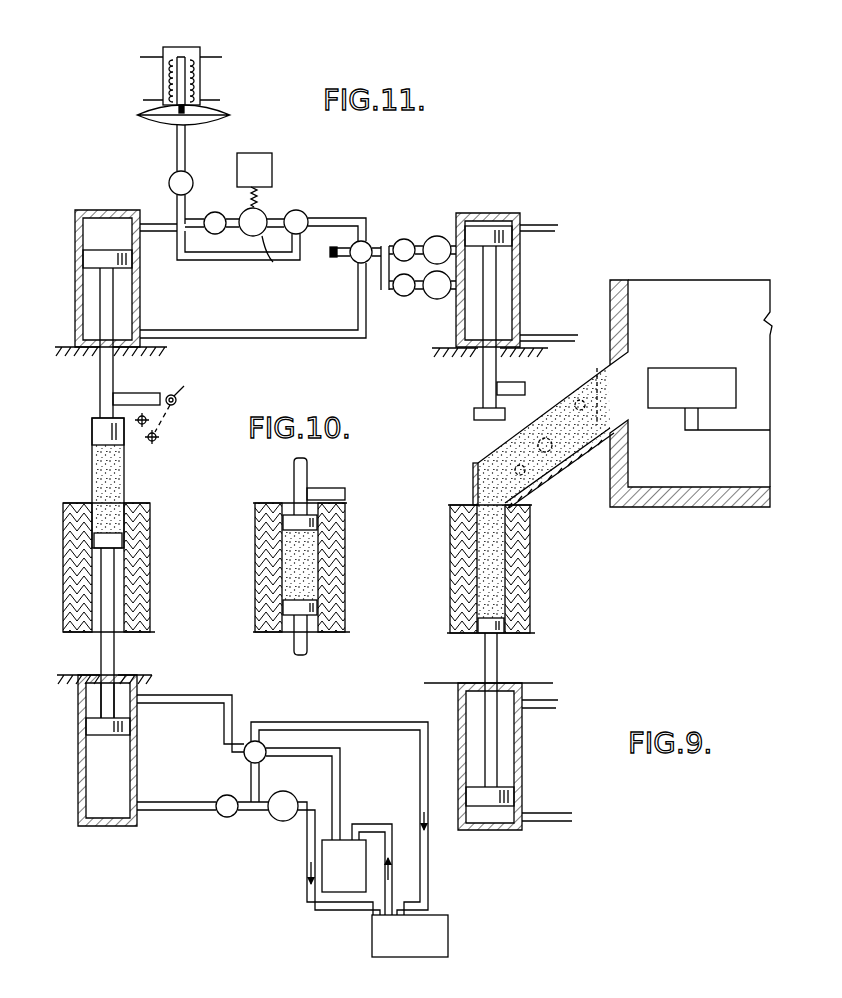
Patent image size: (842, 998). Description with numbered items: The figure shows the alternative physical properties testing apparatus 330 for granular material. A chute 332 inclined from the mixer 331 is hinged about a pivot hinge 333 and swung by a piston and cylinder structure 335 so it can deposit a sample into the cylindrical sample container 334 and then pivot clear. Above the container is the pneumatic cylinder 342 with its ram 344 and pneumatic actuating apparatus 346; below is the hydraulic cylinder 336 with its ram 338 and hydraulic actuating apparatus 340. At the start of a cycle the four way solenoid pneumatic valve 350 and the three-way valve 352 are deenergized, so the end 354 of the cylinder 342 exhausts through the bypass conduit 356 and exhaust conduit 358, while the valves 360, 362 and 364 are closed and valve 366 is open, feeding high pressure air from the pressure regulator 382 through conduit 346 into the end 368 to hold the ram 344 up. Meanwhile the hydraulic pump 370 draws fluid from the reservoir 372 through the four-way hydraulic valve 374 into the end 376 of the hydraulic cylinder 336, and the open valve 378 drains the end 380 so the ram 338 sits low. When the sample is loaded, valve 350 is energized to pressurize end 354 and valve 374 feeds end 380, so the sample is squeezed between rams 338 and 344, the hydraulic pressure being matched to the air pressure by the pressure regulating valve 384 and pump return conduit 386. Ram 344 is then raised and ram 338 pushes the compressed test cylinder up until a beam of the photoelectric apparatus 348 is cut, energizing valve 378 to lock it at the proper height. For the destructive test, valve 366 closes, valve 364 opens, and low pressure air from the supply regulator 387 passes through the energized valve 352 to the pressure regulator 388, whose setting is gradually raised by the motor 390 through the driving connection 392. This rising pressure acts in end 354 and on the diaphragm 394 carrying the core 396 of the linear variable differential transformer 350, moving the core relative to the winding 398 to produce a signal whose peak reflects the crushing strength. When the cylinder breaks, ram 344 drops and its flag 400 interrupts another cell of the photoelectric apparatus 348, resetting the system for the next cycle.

In FIG. 9, the physical properties testing apparatus 330 is at (518, 168).
In FIG. 9, the mixer 331 is at (668, 507).
In FIG. 9, the chute structure 332 is at (474, 466).
In FIG. 9, the pivot hinge 333 is at (578, 410).
In FIG. 11, the cylindrical sample container 334 is at (142, 587).
In FIG. 10, the cylindrical sample container 334 is at (330, 578).
In FIG. 9, the cylindrical sample container 334 is at (522, 578).
In FIG. 9, the piston and cylinder structure 335 is at (561, 470).
In FIG. 11, the hydraulic cylinder 336 is at (80, 771).
In FIG. 9, the hydraulic cylinder 336 is at (522, 762).
In FIG. 11, the ram 338 is at (118, 656).
In FIG. 10, the ram 338 is at (307, 648).
In FIG. 9, the ram 338 is at (484, 660).
In FIG. 11, the hydraulic actuating apparatus 340 is at (278, 845).
In FIG. 11, the pneumatic cylinder 342 is at (78, 281).
In FIG. 9, the pneumatic cylinder 342 is at (520, 284).
In FIG. 11, the ram 344 is at (100, 378).
In FIG. 10, the ram 344 is at (296, 476).
In FIG. 9, the ram 344 is at (482, 372).
In FIG. 11, the pneumatic actuating apparatus / conduit 346 is at (289, 340).
In FIG. 9, the pneumatic actuating apparatus / conduit 346 is at (545, 338).
In FIG. 11, the photoelectric apparatus 348 is at (153, 445).
In FIG. 11, the linear variable differential transformer / four-way solenoid operated pneumatic 350 is at (260, 126).
In FIG. 11, the three-way solenoid operated valve 352 is at (174, 147).
In FIG. 11, the end of cylinder 354 is at (90, 234).
In FIG. 11, the bypass conduit 356 is at (216, 261).
In FIG. 11, the exhaust conduit 358 is at (350, 254).
In FIG. 11, the solenoid operated valve 360 is at (169, 183).
In FIG. 11, the solenoid operated valve 362 is at (210, 213).
In FIG. 9, the solenoid operated valve 364 is at (398, 297).
In FIG. 9, the solenoid operated valve 366 is at (405, 238).
In FIG. 11, the end of cylinder 368 is at (92, 315).
In FIG. 11, the hydraulic pump 370 is at (345, 838).
In FIG. 11, the hydraulic fluid reservoir 372 is at (395, 957).
In FIG. 11, the solenoid operated four-way hydraulic valve 374 is at (245, 758).
In FIG. 11, the end of hydraulic cylinder 376 is at (90, 703).
In FIG. 11, the solenoid operated valve 378 is at (221, 817).
In FIG. 11, the end of hydraulic cylinder 380 is at (103, 812).
In FIG. 9, the pressure regulator 382 is at (438, 236).
In FIG. 11, the pressure regulating valve 384 is at (273, 819).
In FIG. 11, the pump return conduit 386 is at (300, 899).
In FIG. 9, the low pressure air supply regulator 387 is at (433, 300).
In FIG. 11, the pressure regulator 388 is at (264, 240).
In FIG. 11, the motor 390 is at (275, 160).
In FIG. 11, the driving connection 392 is at (265, 211).
In FIG. 11, the diaphragm 394 is at (193, 118).
In FIG. 11, the core 396 is at (176, 77).
In FIG. 11, the winding 398 is at (203, 72).
In FIG. 11, the flag 400 is at (147, 391).
In FIG. 10, the flag 400 is at (326, 489).
In FIG. 9, the flag 400 is at (516, 379).